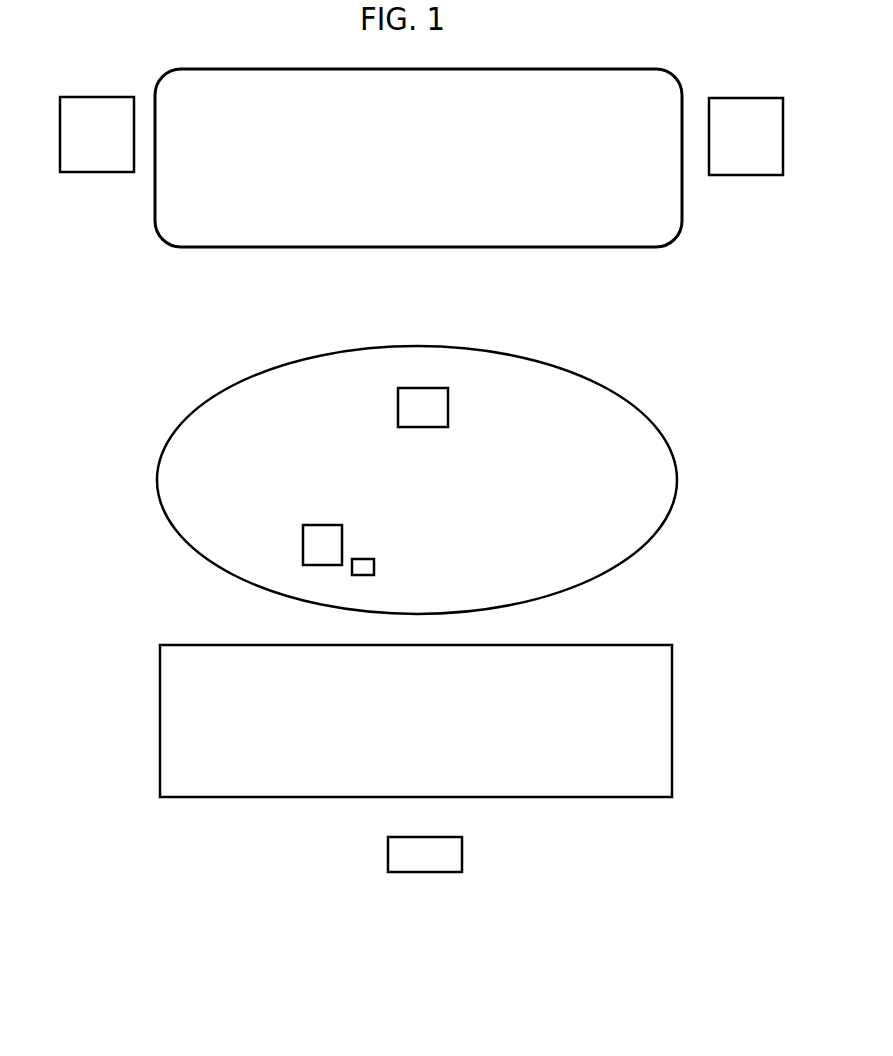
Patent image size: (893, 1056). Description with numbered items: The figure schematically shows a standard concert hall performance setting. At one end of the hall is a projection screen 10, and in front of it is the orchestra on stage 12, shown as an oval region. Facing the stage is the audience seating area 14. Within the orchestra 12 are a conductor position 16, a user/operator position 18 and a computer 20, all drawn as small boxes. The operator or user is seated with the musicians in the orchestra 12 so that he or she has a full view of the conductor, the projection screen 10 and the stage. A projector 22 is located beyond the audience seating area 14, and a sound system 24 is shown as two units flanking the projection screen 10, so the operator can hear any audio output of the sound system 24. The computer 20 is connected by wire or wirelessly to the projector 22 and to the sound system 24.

The projection screen 10 is at (418, 158).
The orchestra on stage 12 is at (625, 398).
The audience seating area 14 is at (416, 721).
The conductor position 16 is at (398, 410).
The user/operator position 18 is at (303, 540).
The computer 20 is at (374, 567).
The projector 22 is at (388, 856).
The sound system 24 is at (101, 172).